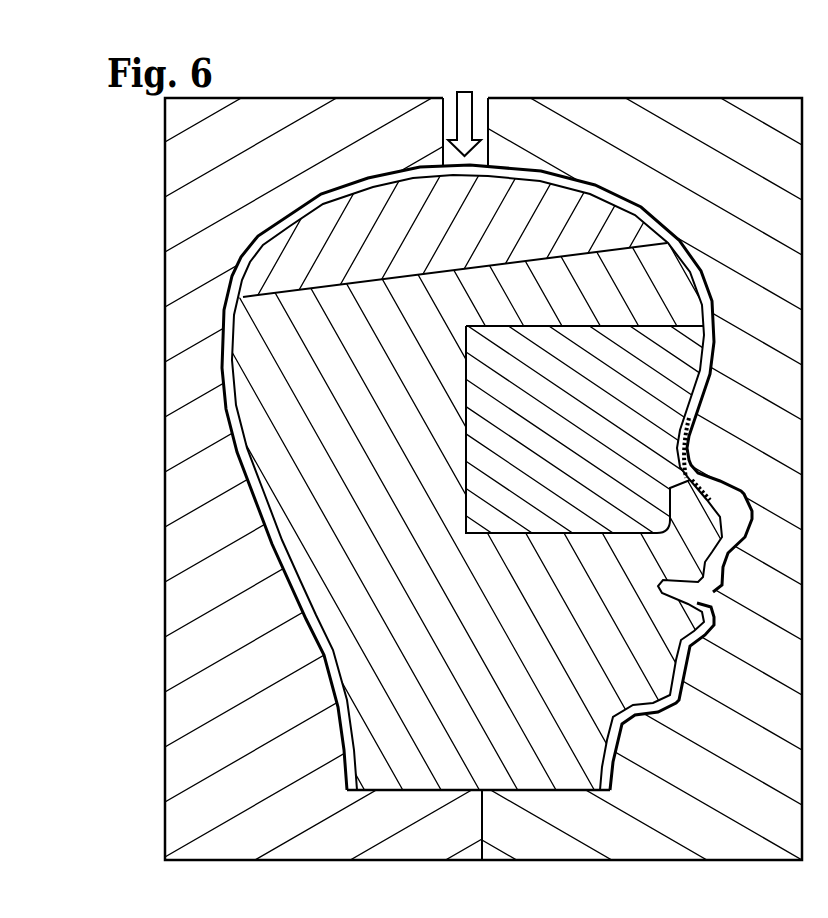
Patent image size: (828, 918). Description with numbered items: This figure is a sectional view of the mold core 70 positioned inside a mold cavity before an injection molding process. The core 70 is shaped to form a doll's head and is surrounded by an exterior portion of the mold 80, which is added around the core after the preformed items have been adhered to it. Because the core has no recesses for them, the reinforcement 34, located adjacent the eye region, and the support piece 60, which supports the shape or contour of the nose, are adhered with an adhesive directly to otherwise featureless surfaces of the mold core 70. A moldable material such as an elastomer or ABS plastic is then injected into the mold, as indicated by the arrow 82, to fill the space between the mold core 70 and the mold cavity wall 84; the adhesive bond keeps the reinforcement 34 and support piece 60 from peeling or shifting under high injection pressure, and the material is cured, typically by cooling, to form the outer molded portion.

The mold core 70 is at (362, 217).
The exterior portion of the mold 80 is at (510, 103).
The arrow 82 is at (458, 92).
The mold cavity wall 84 is at (588, 183).
The reinforcement 34 is at (687, 437).
The support piece 60 is at (696, 487).